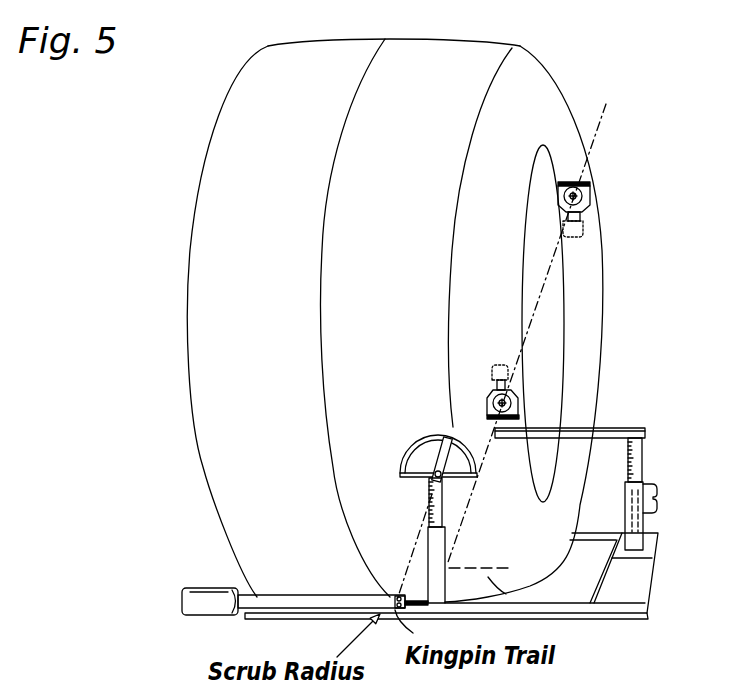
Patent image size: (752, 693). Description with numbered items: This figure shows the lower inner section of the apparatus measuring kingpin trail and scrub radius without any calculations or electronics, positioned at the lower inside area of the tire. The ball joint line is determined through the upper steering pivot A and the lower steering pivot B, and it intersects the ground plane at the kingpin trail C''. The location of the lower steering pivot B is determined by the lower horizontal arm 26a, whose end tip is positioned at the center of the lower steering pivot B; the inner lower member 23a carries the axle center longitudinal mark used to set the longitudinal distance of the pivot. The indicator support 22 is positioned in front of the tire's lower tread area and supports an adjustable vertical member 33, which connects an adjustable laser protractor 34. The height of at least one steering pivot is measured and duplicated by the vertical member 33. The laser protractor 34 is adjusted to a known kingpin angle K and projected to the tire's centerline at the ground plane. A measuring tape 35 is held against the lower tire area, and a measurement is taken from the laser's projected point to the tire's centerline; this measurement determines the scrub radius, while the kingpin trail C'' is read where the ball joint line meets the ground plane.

The kingpin angle K is at (599, 127).
The upper steering pivot A is at (591, 190).
The lower steering pivot B is at (518, 395).
The lower horizontal arm 26a is at (603, 428).
The laser protractor 34 is at (410, 460).
The vertical member 33 is at (443, 504).
The kingpin trail C'' is at (479, 557).
The inner lower member 23a is at (632, 585).
The indicator support 22 is at (605, 611).
The measuring tape 35 is at (192, 603).